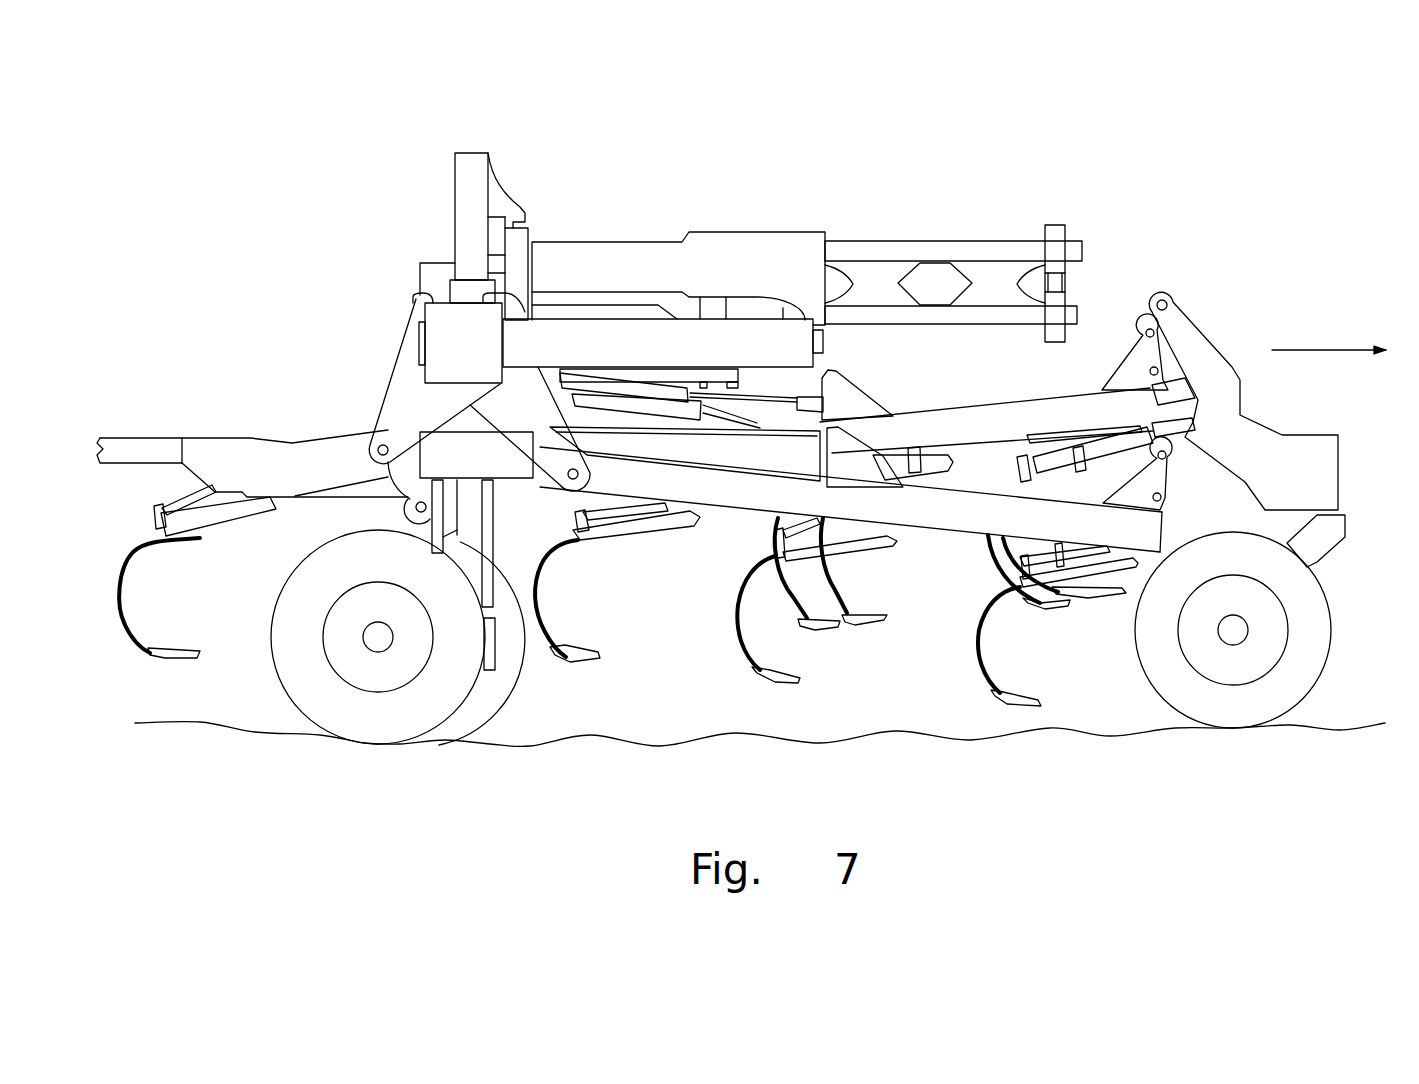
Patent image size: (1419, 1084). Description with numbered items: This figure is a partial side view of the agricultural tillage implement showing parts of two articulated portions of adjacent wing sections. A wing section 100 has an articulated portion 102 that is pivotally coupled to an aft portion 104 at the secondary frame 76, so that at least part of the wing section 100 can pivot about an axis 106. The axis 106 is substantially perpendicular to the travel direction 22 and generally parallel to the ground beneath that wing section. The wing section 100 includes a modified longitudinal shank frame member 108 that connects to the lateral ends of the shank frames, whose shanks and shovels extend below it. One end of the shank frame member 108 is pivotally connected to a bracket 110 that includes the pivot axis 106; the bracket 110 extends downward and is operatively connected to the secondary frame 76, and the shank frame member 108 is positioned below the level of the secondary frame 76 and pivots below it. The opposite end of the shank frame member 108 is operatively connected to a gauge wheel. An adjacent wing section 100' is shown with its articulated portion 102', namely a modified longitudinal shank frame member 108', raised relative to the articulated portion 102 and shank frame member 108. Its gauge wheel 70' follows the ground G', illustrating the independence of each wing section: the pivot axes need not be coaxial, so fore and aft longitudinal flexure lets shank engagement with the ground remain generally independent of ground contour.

The travel direction 22 is at (1330, 350).
The gauge wheel 70' is at (1261, 630).
The secondary frame 76 is at (438, 325).
The wing section 100 is at (600, 426).
The adjacent wing section 100' is at (1220, 381).
The articulated portion 102 is at (945, 566).
The articulated portion 102' is at (1147, 305).
The aft portion 104 is at (203, 412).
The axis 106 is at (593, 487).
The modified longitudinal shank frame member 108 is at (851, 523).
The modified longitudinal shank frame member 108' is at (1007, 422).
The bracket 110 is at (513, 422).
The ground G' is at (760, 758).